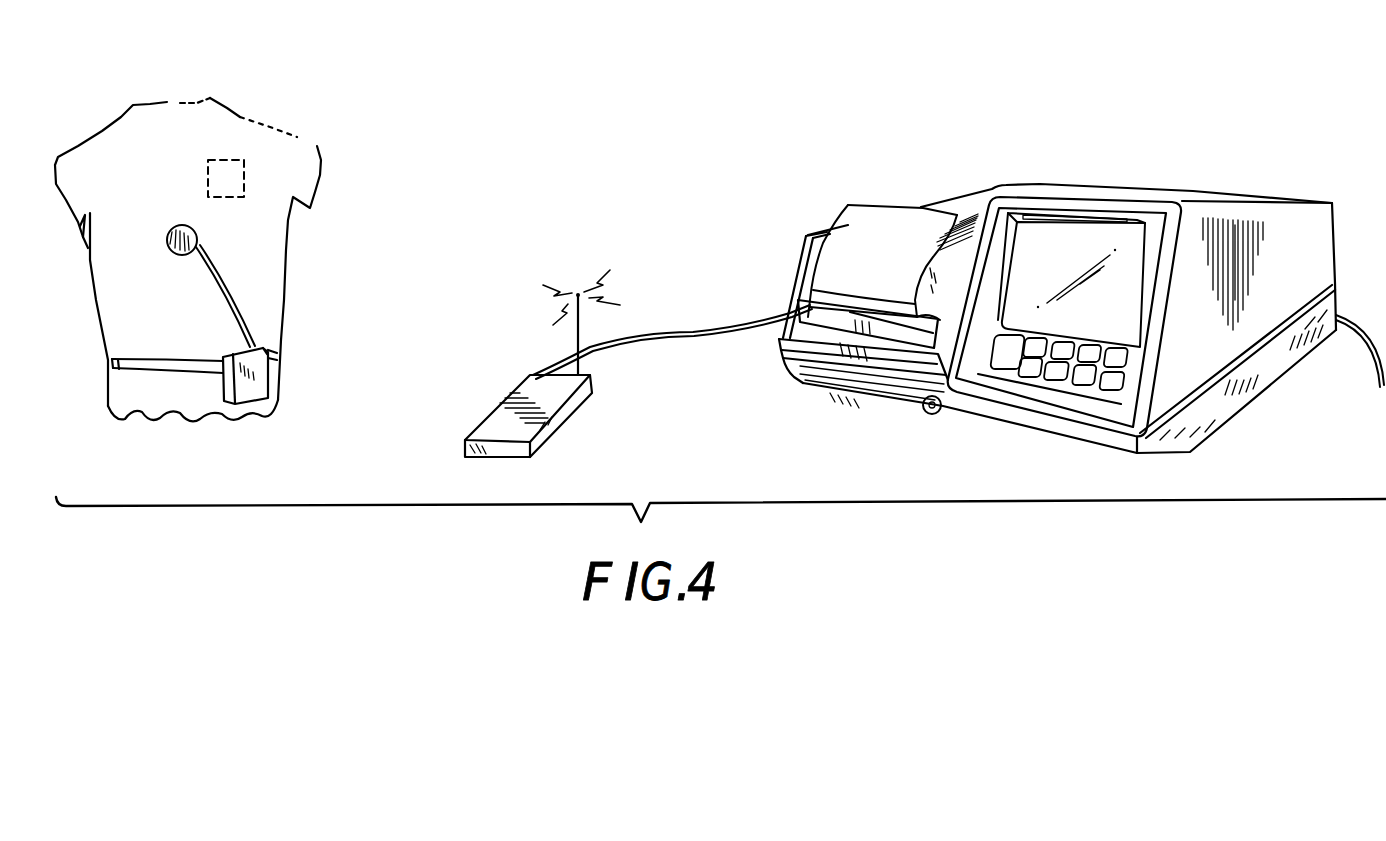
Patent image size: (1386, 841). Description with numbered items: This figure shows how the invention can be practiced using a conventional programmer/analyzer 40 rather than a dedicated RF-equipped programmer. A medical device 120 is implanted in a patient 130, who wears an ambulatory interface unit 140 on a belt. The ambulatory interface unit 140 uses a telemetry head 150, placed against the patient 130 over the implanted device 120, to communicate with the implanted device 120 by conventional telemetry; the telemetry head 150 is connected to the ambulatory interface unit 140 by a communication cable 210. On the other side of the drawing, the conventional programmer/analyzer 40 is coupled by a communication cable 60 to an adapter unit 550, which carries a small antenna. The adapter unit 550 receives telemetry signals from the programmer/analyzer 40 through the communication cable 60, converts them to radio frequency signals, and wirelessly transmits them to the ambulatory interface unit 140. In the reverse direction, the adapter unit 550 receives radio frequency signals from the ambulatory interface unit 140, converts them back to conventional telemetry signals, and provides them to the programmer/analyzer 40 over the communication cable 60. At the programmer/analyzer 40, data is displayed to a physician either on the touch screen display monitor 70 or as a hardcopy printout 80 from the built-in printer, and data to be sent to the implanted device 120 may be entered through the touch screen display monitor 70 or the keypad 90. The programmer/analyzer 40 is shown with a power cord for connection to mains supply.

The patient 130 is at (140, 102).
The medical device 120 is at (206, 158).
The telemetry head 150 is at (180, 218).
The communication cable 210 is at (217, 293).
The ambulatory interface unit 140 is at (260, 385).
The adapter unit 550 is at (550, 437).
The communication cable 60 is at (690, 342).
The hardcopy printout 80 is at (823, 275).
The programmer/analyzer 40 is at (1058, 296).
The touch screen display monitor 70 is at (1137, 240).
The keypad 90 is at (1107, 387).